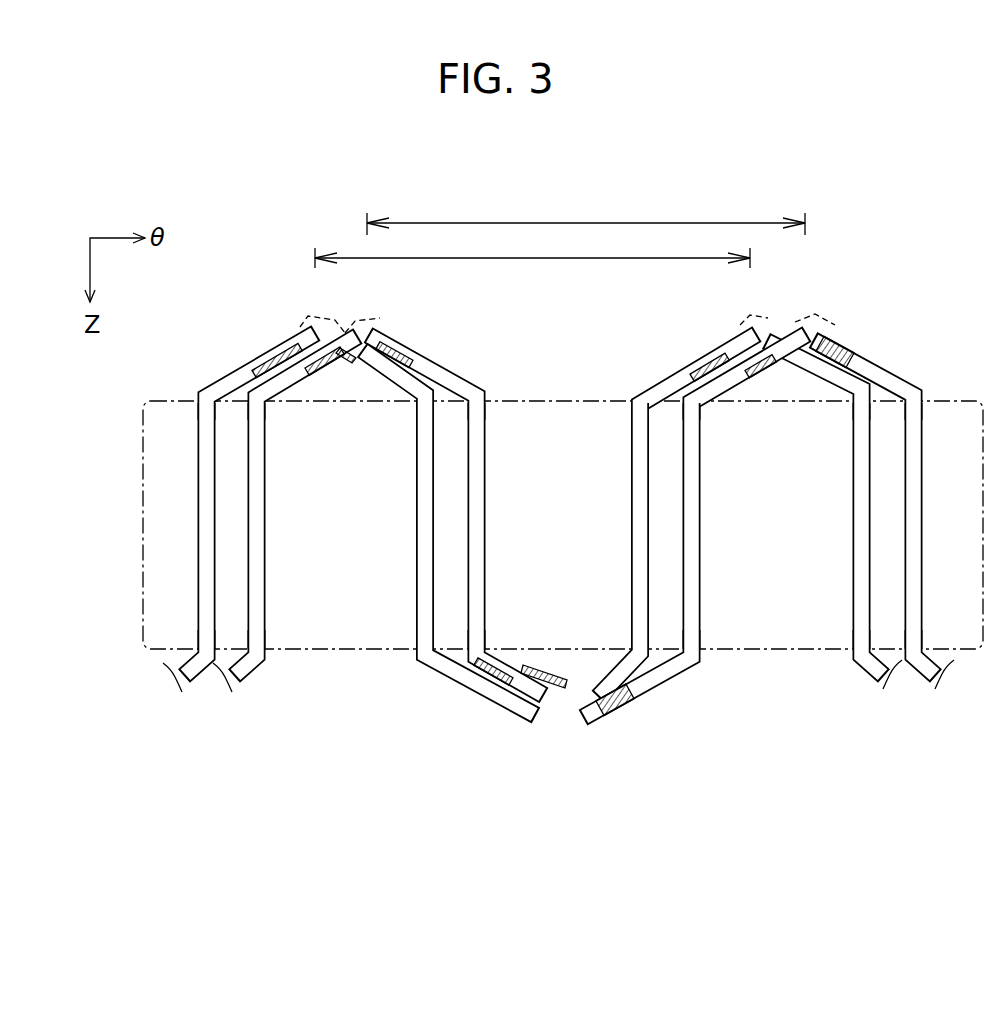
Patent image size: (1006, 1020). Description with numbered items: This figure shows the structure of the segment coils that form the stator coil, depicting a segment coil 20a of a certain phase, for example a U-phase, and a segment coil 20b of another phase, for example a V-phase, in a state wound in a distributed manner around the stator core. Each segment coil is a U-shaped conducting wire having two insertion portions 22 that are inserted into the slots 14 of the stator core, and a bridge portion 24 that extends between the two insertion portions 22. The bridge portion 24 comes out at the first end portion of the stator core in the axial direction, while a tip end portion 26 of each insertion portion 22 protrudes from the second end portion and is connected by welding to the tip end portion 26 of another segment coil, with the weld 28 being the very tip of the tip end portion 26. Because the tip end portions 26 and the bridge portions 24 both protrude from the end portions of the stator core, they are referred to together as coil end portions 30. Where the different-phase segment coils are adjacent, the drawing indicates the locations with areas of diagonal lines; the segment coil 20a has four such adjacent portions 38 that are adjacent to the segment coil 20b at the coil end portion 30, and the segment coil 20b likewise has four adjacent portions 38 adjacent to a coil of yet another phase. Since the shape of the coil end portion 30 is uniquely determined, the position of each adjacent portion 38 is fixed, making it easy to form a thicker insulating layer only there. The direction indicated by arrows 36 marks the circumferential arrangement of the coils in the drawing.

The slot 14 is at (945, 509).
The segment coil of a certain phase 20a is at (532, 250).
The segment coil of another phase 20b is at (586, 215).
The insertion portion 22 is at (416, 513).
The bridge portion 24 is at (500, 706).
The tip end portion 26 is at (447, 372).
The weld 28 is at (300, 327).
The coil end portion 30 is at (558, 550).
The bending direction 36 is at (268, 338).
The adjacent portion 38 is at (265, 373).